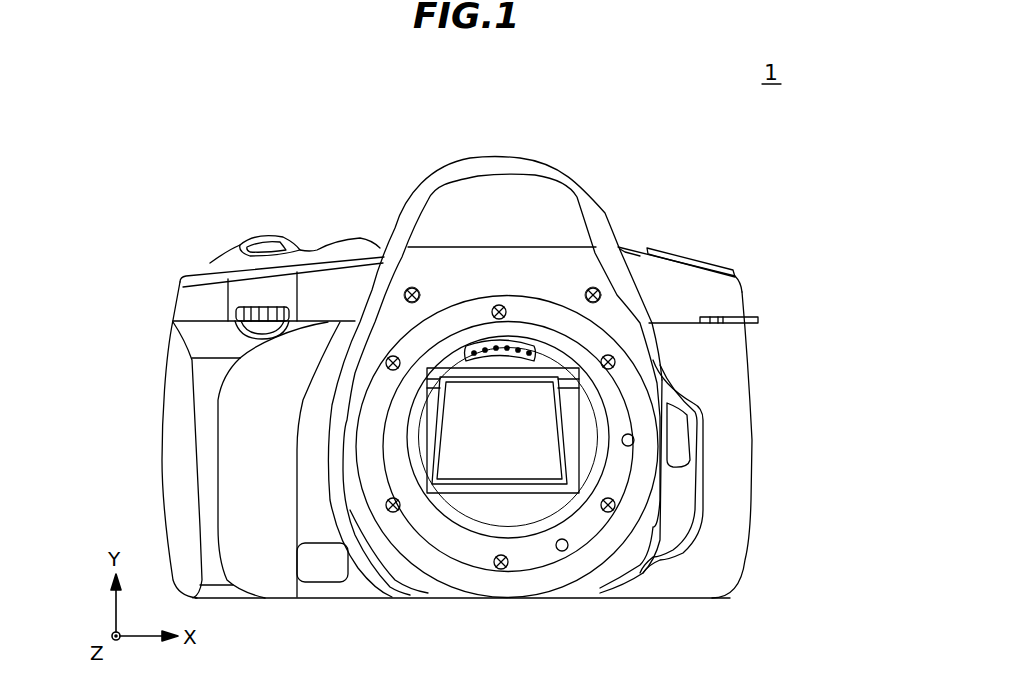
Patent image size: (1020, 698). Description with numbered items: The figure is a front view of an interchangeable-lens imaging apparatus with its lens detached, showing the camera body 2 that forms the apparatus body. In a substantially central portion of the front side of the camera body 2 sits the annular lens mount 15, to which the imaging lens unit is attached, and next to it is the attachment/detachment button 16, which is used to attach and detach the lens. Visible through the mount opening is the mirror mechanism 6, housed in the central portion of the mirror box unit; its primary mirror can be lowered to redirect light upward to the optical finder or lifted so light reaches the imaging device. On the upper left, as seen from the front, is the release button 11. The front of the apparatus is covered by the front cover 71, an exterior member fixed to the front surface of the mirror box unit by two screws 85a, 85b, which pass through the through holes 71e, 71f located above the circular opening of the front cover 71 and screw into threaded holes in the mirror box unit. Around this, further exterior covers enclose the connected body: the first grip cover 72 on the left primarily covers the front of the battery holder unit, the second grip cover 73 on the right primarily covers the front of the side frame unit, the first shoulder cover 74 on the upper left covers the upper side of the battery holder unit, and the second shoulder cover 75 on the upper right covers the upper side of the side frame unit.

The camera body 2 is at (140, 355).
The mirror mechanism 6 is at (490, 458).
The release button 11 is at (262, 244).
The annular lens mount 15 is at (623, 487).
The attachment/detachment button 16 is at (690, 427).
The front cover 71 is at (525, 210).
The through hole 71e is at (414, 290).
The through hole 71f is at (591, 290).
The first grip cover 72 is at (178, 437).
The second grip cover 73 is at (718, 475).
The first shoulder cover 74 is at (192, 300).
The second shoulder cover 75 is at (678, 301).
The screw 85a is at (410, 290).
The screw 85b is at (596, 290).